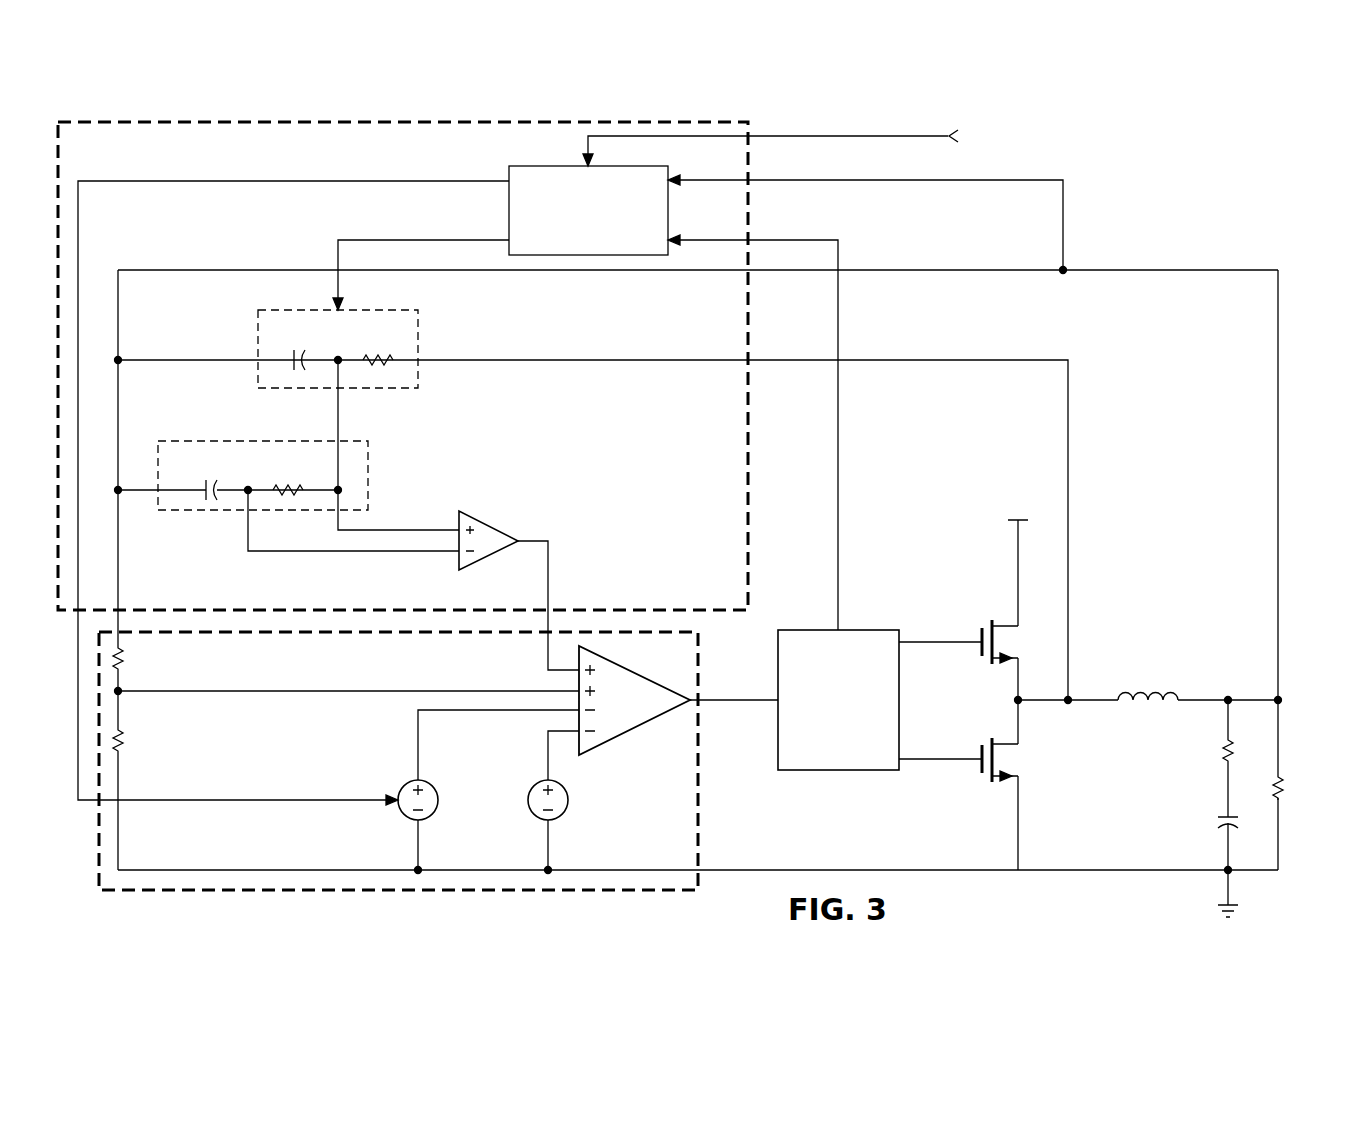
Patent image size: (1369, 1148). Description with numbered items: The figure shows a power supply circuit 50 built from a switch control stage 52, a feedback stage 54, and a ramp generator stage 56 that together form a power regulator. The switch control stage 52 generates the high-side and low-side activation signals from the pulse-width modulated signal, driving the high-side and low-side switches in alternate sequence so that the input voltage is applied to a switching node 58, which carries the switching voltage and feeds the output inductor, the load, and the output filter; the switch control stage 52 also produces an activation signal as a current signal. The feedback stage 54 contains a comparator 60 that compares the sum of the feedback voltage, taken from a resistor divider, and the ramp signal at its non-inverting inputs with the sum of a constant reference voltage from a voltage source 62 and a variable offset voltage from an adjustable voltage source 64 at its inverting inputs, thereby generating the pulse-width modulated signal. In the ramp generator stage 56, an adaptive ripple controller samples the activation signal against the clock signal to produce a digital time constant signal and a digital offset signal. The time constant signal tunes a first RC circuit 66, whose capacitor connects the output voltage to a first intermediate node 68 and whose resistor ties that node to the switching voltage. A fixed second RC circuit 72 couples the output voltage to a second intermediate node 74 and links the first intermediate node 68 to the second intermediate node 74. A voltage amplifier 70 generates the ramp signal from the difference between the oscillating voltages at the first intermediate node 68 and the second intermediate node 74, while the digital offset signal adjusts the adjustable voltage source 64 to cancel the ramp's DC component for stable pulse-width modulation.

The power supply circuit 50 is at (1152, 174).
The switch control stage 52 is at (859, 771).
The feedback stage 54 is at (707, 786).
The ramp generator stage 56 is at (758, 424).
The switching node 58 is at (982, 698).
The comparator 60 is at (631, 732).
The voltage source 62 is at (556, 818).
The adjustable voltage source 64 is at (426, 818).
The first RC circuit 66 is at (250, 336).
The first intermediate node 68 is at (340, 424).
The voltage amplifier 70 is at (486, 560).
The second RC circuit 72 is at (206, 434).
The second intermediate node 74 is at (356, 554).